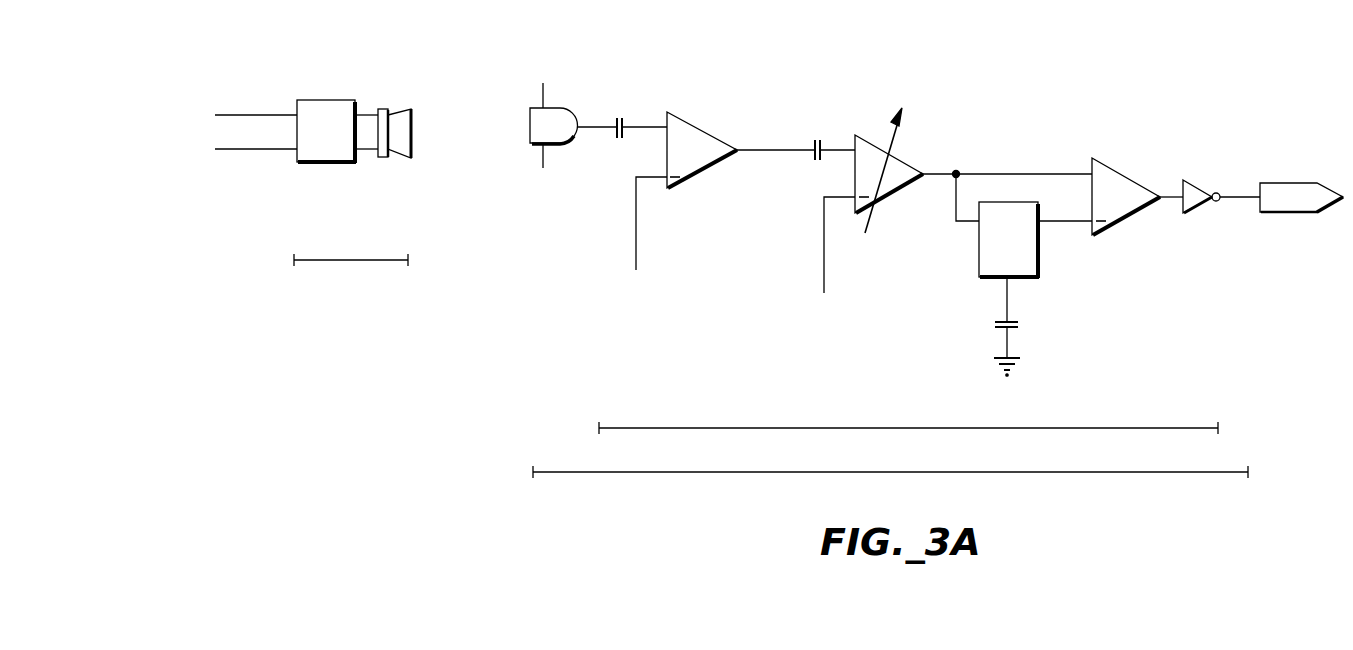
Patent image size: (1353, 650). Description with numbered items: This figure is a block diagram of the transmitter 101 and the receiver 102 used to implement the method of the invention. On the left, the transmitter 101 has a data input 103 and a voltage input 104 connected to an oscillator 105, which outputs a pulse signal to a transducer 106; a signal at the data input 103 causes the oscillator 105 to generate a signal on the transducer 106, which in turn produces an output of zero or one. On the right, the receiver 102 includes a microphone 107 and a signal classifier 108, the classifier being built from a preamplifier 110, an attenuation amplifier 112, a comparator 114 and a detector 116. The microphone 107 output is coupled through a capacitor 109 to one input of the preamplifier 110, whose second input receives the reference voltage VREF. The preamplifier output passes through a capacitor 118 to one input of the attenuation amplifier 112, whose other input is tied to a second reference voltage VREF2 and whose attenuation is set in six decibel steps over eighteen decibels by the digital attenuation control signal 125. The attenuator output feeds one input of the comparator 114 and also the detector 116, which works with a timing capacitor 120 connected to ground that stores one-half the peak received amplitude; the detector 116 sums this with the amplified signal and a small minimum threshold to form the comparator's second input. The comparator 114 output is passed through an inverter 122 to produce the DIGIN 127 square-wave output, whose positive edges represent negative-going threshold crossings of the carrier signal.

The transmitter 101 is at (323, 260).
The receiver 102 is at (808, 472).
The data input 103 is at (215, 149).
The voltage input 104 is at (215, 115).
The oscillator 105 is at (318, 162).
The transducer 106 is at (412, 132).
The microphone 107 is at (562, 143).
The signal classifier 108 is at (870, 428).
The capacitor 109 is at (623, 125).
The preamplifier 110 is at (697, 177).
The attenuation amplifier 112 is at (883, 198).
The comparator 114 is at (1123, 223).
The detector 116 is at (1040, 247).
The capacitor 118 is at (814, 143).
The timing capacitor 120 is at (1015, 327).
The inverter 122 is at (1192, 213).
The attenuation control signal 125 is at (886, 140).
The DIGIN 127 is at (1290, 212).